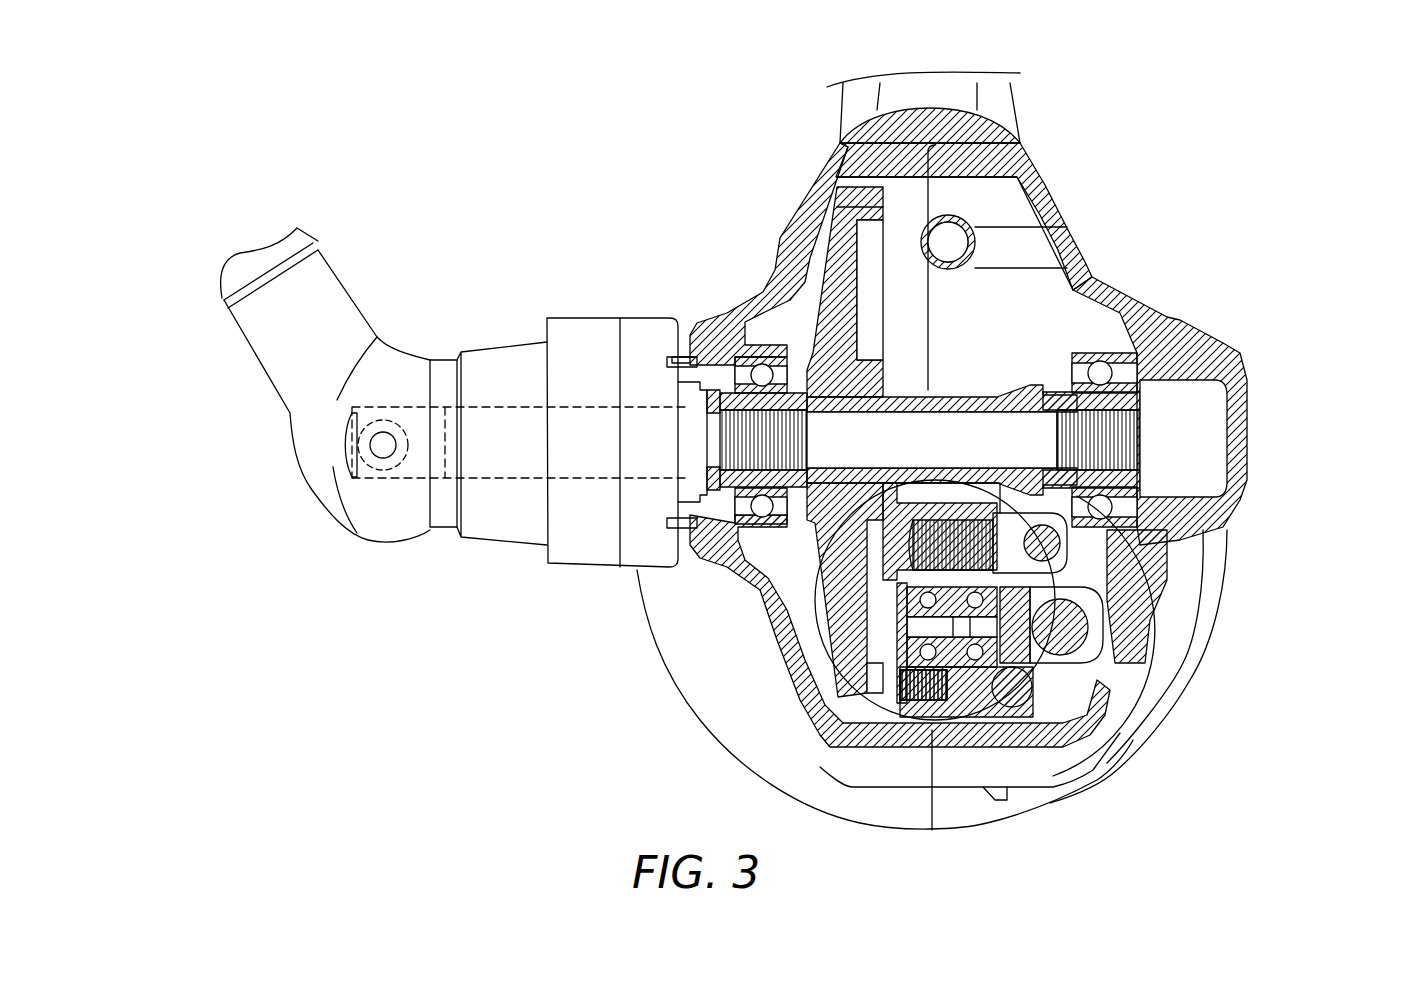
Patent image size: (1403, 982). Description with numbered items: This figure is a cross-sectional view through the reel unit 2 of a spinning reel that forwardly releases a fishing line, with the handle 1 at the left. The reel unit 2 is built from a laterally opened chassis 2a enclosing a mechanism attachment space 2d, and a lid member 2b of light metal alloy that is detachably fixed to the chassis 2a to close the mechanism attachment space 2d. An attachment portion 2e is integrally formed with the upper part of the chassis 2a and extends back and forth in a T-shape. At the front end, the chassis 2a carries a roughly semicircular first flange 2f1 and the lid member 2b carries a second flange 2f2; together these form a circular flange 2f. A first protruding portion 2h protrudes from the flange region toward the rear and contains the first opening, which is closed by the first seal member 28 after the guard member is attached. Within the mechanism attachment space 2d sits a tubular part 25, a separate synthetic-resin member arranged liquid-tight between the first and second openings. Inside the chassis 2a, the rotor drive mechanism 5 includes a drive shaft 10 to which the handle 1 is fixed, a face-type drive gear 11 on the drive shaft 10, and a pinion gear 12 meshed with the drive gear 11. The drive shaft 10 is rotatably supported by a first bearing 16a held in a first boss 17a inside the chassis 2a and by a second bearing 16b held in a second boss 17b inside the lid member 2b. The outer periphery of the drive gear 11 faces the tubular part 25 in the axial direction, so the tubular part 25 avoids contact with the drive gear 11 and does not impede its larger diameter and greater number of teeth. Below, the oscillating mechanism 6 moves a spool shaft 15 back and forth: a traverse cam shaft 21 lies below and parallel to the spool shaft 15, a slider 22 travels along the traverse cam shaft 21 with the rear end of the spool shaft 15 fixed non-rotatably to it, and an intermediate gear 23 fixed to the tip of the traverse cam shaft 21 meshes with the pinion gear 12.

The handle 1 is at (260, 232).
The reel unit 2 is at (982, 407).
The chassis 2a is at (1100, 253).
The lid member 2b is at (778, 230).
The mechanism attachment space 2d is at (1075, 328).
The attachment portion 2e is at (1012, 97).
The flange 2f is at (975, 676).
The first flange 2f1 is at (1218, 567).
The second flange 2f2 is at (748, 732).
The first protruding portion 2h is at (988, 262).
The rotor drive mechanism 5 is at (987, 383).
The oscillating mechanism 6 is at (1085, 650).
The drive shaft 10 is at (915, 390).
The drive gear 11 is at (857, 350).
The pinion gear 12 is at (890, 575).
The spool shaft 15 is at (845, 630).
The first bearing 16a is at (1193, 330).
The second bearing 16b is at (705, 320).
The first boss 17a is at (1123, 297).
The second boss 17b is at (757, 347).
The traverse cam shaft 21 is at (1093, 640).
The slider 22 is at (898, 727).
The intermediate gear 23 is at (1148, 660).
The tubular part 25 is at (945, 217).
The first seal member 28 is at (928, 235).